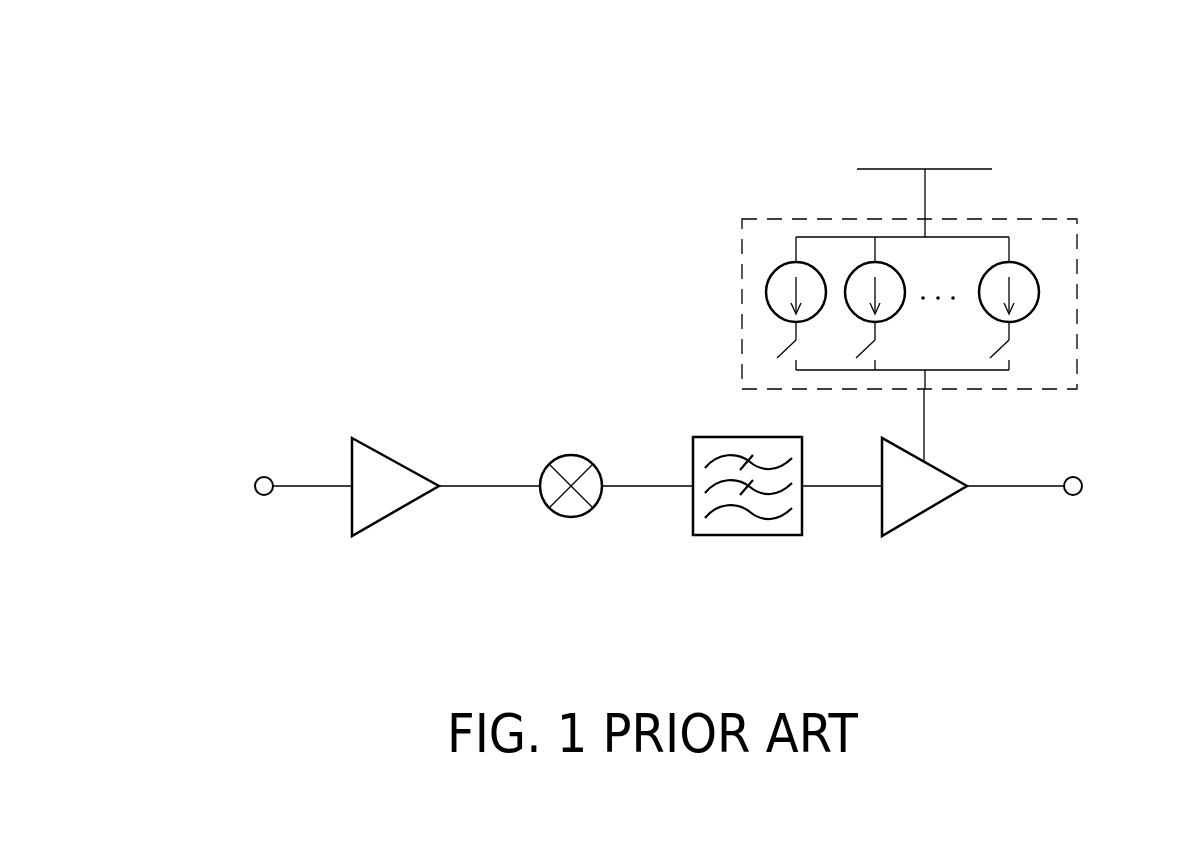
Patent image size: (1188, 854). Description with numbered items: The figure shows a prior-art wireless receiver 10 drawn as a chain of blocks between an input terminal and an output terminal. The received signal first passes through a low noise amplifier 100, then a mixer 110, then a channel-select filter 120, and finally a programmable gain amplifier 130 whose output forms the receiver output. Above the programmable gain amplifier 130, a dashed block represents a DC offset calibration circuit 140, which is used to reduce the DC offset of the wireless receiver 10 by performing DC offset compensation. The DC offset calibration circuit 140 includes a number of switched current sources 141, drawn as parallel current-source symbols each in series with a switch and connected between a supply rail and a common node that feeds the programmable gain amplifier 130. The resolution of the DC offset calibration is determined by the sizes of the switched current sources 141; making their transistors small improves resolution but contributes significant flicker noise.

The wireless receiver 10 is at (392, 168).
The low noise amplifier 100 is at (387, 452).
The mixer 110 is at (570, 455).
The channel-select filter 120 is at (737, 536).
The programmable gain amplifier 130 is at (913, 518).
The DC offset calibration circuit 140 is at (742, 266).
The switched current source 141 is at (1040, 282).